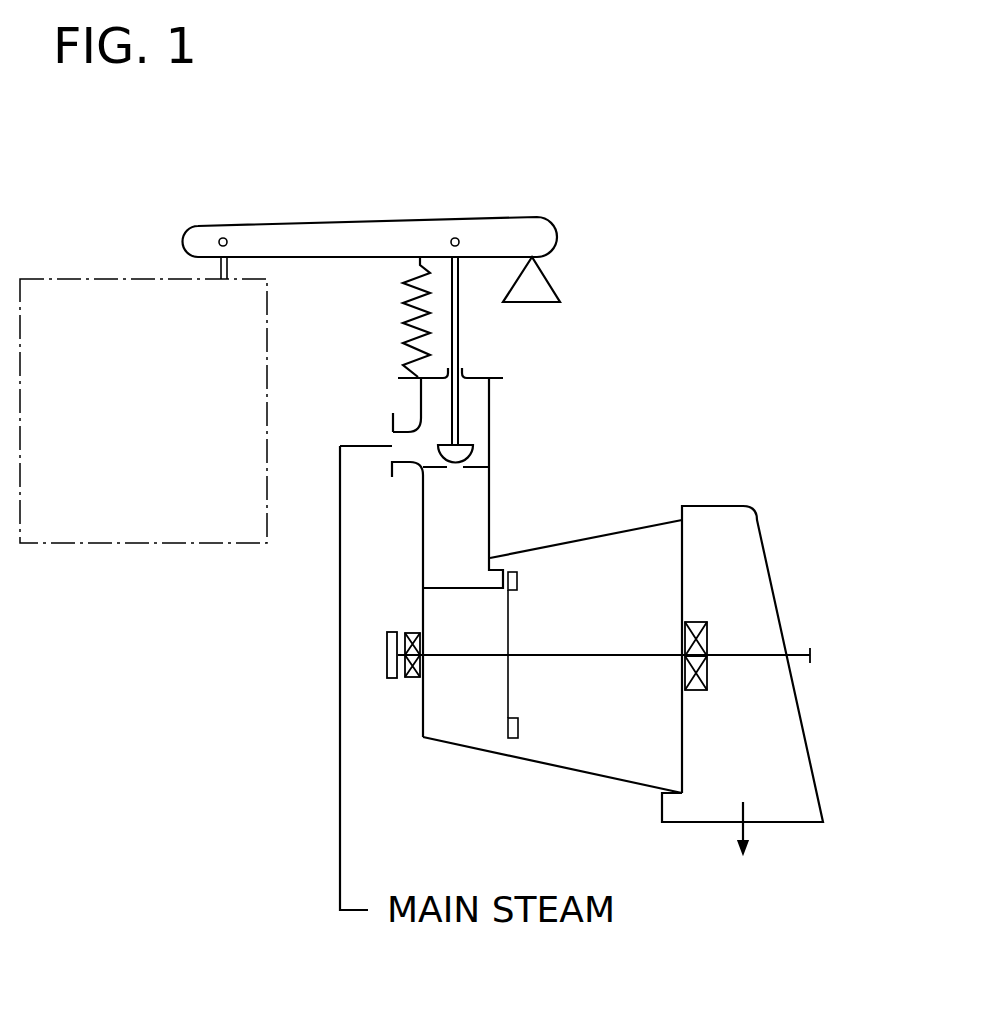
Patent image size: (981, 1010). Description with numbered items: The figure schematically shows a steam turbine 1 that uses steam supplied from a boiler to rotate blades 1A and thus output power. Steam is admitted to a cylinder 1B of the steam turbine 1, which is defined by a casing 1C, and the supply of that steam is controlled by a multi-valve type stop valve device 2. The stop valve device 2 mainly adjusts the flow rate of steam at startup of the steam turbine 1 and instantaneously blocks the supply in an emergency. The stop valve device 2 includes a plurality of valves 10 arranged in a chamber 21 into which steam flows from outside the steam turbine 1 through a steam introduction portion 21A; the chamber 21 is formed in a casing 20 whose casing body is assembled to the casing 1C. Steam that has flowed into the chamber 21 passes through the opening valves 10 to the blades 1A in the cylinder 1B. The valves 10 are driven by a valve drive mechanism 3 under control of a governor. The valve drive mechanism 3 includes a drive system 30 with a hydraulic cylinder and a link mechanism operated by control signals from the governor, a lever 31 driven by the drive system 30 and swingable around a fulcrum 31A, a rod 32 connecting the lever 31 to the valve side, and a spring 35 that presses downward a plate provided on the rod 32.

The steam turbine 1 is at (605, 630).
The blades 1A is at (519, 582).
The cylinder 1B is at (613, 724).
The casing 1C is at (647, 525).
The stop valve device 2 is at (427, 639).
The valve 10 is at (488, 450).
The casing 20 is at (490, 520).
The chamber 21 is at (362, 409).
The steam introduction portion 21A is at (340, 426).
The valve drive mechanism 3 is at (324, 326).
The drive system 30 is at (60, 278).
The lever 31 is at (476, 216).
The fulcrum 31A is at (546, 278).
The rod 32 is at (460, 318).
The spring 35 is at (405, 337).